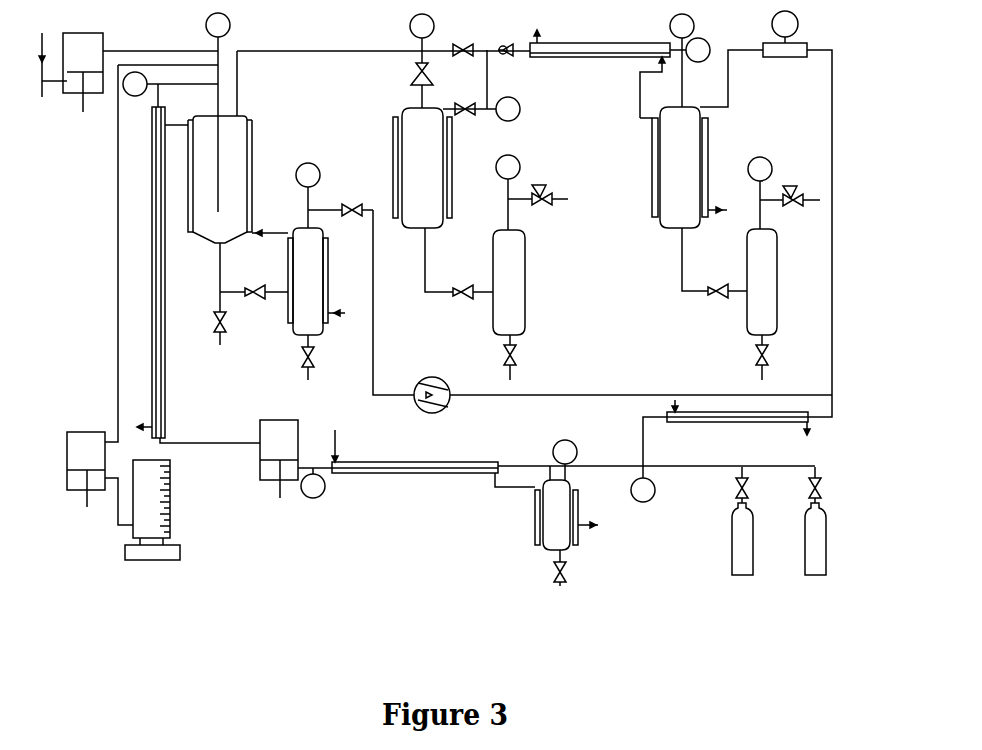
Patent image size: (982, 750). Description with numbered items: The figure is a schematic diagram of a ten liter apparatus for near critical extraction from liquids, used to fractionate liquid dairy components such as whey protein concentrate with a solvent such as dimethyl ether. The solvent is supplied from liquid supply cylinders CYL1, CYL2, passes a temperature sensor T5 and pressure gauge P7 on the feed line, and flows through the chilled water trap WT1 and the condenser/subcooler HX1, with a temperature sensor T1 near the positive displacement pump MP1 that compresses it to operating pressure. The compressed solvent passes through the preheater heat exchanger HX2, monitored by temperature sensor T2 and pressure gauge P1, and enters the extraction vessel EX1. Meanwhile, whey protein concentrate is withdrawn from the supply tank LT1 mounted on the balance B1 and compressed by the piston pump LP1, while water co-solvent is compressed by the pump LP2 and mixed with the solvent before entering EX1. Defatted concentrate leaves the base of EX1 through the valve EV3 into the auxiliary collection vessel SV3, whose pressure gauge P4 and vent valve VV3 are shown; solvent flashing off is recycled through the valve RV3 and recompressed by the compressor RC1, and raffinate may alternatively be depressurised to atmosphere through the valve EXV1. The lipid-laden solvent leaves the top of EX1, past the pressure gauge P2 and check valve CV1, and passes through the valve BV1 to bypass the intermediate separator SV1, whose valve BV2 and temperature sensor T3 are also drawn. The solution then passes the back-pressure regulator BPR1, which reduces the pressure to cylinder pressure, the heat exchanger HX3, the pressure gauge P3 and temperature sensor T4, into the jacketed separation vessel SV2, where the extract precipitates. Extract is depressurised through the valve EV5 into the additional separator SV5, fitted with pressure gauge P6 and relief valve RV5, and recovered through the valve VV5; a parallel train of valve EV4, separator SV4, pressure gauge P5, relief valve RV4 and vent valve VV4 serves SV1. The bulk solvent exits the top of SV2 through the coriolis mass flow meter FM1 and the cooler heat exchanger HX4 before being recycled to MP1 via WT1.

The pump LP2 is at (76, 72).
The pressure gauge 1 P1 is at (218, 112).
The temperature sensor 2 T2 is at (135, 84).
The preheater heat exchanger HX2 is at (146, 272).
The extraction vessel EX1 is at (234, 179).
The valve EXV1 is at (204, 328).
The valve EV3 is at (255, 286).
The auxiliary collection vessel SV3 is at (296, 284).
The vent valve 3 VV3 is at (322, 357).
The pressure gauge 4 P4 is at (308, 175).
The valve RV3 is at (354, 202).
The pressure gauge 2 P2 is at (422, 38).
The check valve 1 CV1 is at (411, 85).
The valve BV1 is at (465, 41).
The back-pressure regulator BPR1 is at (508, 41).
The ball valve 2 BV2 is at (467, 102).
The temperature sensor 3 T3 is at (508, 109).
The heat exchanger HX3 is at (600, 40).
The intermediate separator SV1 is at (409, 168).
The pressure gauge 3 P3 is at (682, 60).
The temperature sensor 4 T4 is at (698, 50).
The coriolis mass flow meter FM1 is at (785, 34).
The jacketed separation vessel SV2 is at (665, 167).
The pressure gauge 5 P5 is at (508, 167).
The relief valve 4 RV4 is at (545, 190).
The expansion valve 4 EV4 is at (464, 285).
The separator vessel 4 SV4 is at (496, 286).
The vent valve 4 VV4 is at (524, 357).
The pressure gauge 6 P6 is at (760, 169).
The relief valve 5 RV5 is at (795, 191).
The valve EV5 is at (718, 285).
The additional separator SV5 is at (748, 285).
The valve VV5 is at (776, 357).
The compressor RC1 is at (432, 405).
The cooler heat exchanger HX4 is at (737, 427).
The piston pump LP1 is at (74, 469).
The supply tank LT1 is at (165, 502).
The balance B1 is at (163, 552).
The positive displacement pump MP1 is at (266, 459).
The temperature sensor 1 T1 is at (313, 486).
The condenser/subcooler HX1 is at (415, 482).
The pressure gauge 7 P7 is at (565, 452).
The chilled water trap WT1 is at (566, 533).
The temperature sensor 5 T5 is at (643, 490).
The liquid supply cylinder CYL1 is at (742, 531).
The liquid supply cylinder CYL2 is at (815, 531).